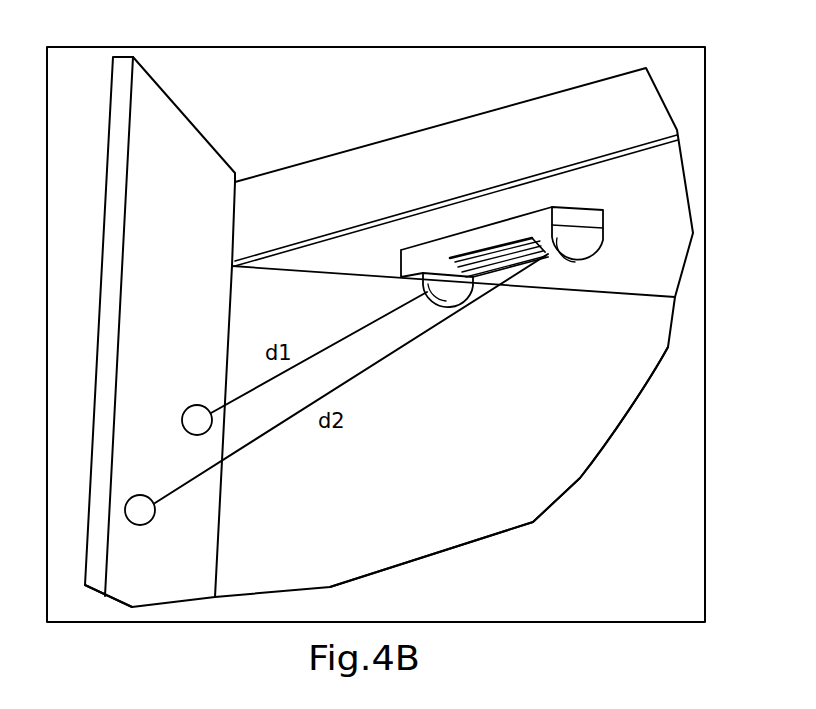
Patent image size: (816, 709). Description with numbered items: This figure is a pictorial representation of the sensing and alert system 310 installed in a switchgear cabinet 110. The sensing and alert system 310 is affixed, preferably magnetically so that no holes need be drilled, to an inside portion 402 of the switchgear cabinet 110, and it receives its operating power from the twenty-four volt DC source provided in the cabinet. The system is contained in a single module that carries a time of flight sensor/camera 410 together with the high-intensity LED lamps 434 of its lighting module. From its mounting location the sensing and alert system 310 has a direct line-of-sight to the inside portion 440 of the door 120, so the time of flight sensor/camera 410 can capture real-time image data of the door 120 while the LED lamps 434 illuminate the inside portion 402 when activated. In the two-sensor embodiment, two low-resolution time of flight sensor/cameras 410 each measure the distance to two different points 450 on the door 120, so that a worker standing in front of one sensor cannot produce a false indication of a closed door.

The switchgear cabinet 110 is at (465, 157).
The door 120 is at (198, 213).
The sensing and alert system 310 is at (588, 193).
The inside portion of the switchgear cabinet 402 is at (626, 456).
The time of flight sensor/camera 410 is at (413, 289).
The high-intensity LED lamps 434 is at (492, 250).
The inside portion of the door 440 is at (150, 340).
The points on the door 450 is at (162, 520).